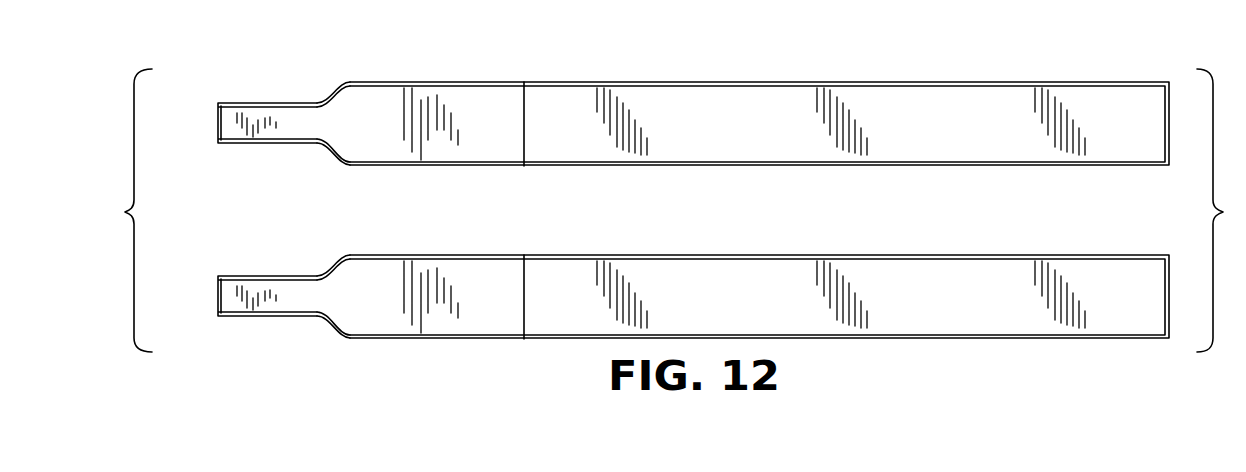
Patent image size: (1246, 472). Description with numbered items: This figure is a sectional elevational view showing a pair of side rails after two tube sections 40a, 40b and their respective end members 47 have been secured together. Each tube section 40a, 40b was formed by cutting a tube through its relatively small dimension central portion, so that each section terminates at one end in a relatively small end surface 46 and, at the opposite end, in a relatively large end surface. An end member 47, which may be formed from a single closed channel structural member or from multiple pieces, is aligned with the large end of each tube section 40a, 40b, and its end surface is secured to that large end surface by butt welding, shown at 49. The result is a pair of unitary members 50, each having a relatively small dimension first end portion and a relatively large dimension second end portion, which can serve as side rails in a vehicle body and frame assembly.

The tube section 40a is at (372, 97).
The tube section 40b is at (380, 323).
The relatively small end surface 46 is at (218, 121).
The end member 47 is at (1015, 102).
The butt weld 49 is at (524, 126).
The unitary member 50 is at (817, 60).